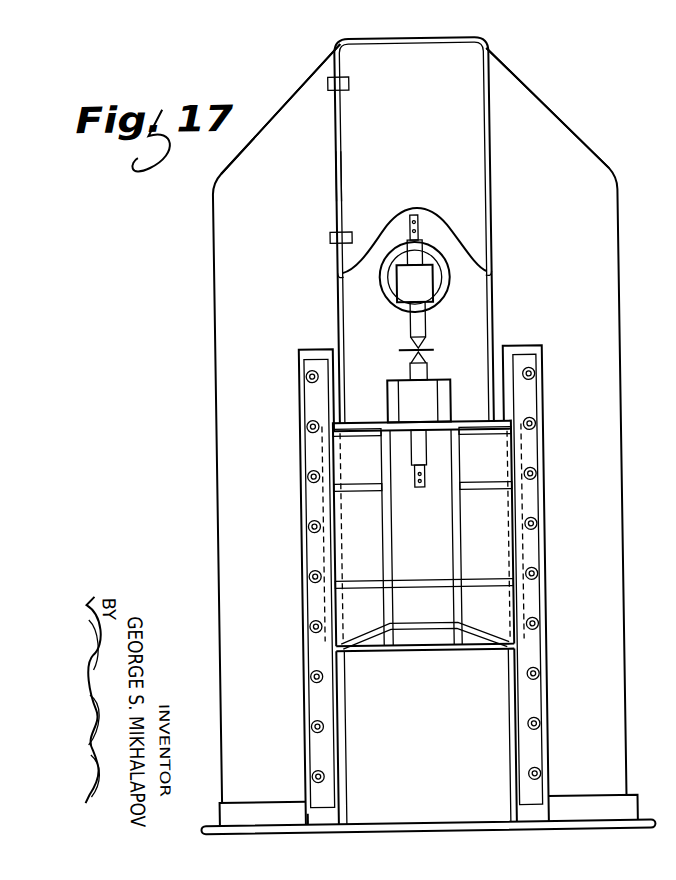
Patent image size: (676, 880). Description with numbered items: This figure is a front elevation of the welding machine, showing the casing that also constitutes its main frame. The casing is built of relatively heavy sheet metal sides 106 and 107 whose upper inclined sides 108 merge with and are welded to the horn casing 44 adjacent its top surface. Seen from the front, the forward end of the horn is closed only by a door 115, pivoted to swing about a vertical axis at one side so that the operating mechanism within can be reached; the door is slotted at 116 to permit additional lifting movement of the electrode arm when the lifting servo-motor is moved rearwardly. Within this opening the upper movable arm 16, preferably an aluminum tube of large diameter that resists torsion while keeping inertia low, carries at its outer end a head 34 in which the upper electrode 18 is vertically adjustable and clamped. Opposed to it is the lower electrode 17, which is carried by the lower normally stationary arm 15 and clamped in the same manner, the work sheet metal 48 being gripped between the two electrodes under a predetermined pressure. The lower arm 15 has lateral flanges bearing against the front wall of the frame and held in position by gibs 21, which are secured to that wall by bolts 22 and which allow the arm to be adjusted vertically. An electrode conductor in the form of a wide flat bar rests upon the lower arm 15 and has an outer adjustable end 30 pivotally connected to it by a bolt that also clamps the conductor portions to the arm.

The upper inclined sides 108 is at (307, 86).
The door 115 is at (467, 144).
The horn casing 44 is at (339, 168).
The slot 116 is at (396, 215).
The head 34 is at (410, 280).
The upper movable arm 16 is at (451, 299).
The electrode 18 is at (429, 322).
The sheet metal 48 is at (410, 345).
The electrode 17 is at (428, 370).
The outer adjustable end 30 is at (447, 390).
The gibs 21 is at (314, 453).
The bolts 22 is at (307, 427).
The lower normally stationary arm 15 is at (430, 603).
The sheet metal side 107 is at (216, 459).
The sheet metal side 106 is at (621, 466).